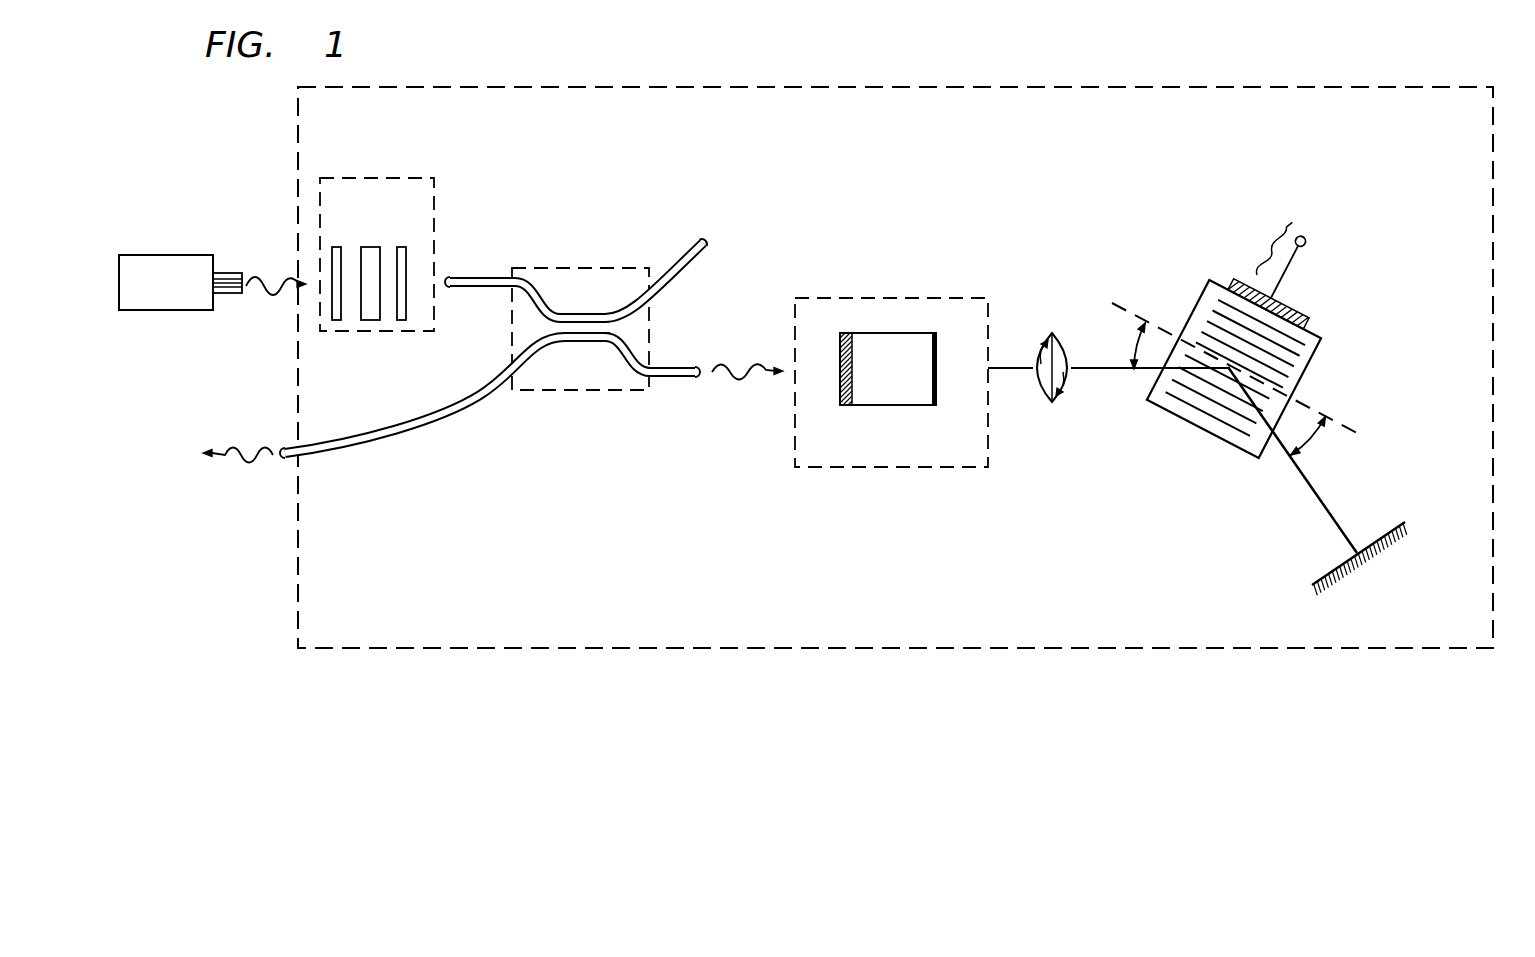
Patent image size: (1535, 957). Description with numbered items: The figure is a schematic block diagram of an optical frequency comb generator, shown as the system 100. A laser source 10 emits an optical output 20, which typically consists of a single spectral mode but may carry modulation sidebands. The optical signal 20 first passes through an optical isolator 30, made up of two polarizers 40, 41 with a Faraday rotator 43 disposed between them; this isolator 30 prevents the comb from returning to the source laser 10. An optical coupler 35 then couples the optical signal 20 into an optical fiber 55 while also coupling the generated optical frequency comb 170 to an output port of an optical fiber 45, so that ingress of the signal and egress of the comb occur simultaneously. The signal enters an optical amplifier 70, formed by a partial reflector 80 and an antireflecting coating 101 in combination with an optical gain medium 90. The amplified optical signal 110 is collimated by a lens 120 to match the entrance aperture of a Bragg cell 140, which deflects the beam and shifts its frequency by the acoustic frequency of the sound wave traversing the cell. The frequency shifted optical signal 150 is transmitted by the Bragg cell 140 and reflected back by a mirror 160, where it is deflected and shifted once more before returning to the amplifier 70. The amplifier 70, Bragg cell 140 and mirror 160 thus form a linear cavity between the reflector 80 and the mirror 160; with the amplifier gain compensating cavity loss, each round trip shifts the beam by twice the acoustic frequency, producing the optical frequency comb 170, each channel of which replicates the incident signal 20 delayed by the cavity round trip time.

The laser source 10 is at (177, 255).
The optical output 20 is at (272, 291).
The optical isolator 30 is at (393, 181).
The polarizer 40 is at (338, 246).
The Faraday rotator 43 is at (371, 246).
The polarizer 41 is at (405, 246).
The optical coupler 35 is at (563, 267).
The optical fiber 45 is at (438, 426).
The optical fiber 55 is at (688, 365).
The optical amplifier 70 is at (900, 297).
The partial reflector 80 is at (843, 407).
The optical gain medium 90 is at (883, 407).
The antireflecting coating 101 is at (937, 407).
The ranging system 100 is at (898, 91).
The optical signal 110 is at (1018, 366).
The lens 120 is at (1052, 403).
The Bragg cell 140 is at (1199, 425).
The frequency shifted optical signal 150 is at (1312, 488).
The mirror 160 is at (1408, 536).
The optical frequency comb 170 is at (252, 463).